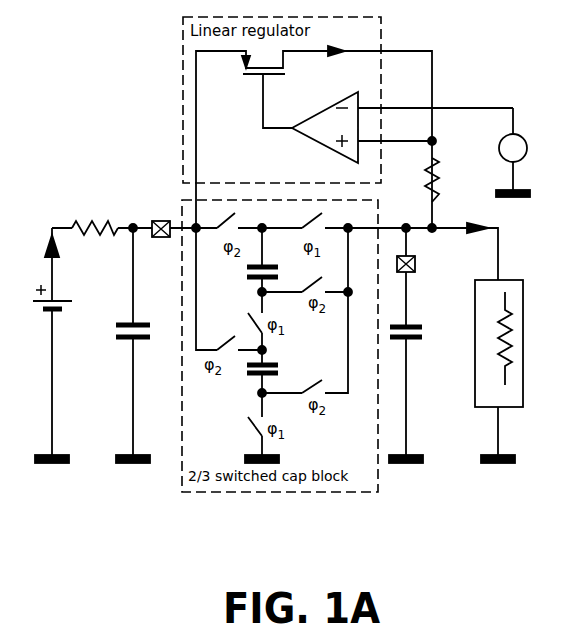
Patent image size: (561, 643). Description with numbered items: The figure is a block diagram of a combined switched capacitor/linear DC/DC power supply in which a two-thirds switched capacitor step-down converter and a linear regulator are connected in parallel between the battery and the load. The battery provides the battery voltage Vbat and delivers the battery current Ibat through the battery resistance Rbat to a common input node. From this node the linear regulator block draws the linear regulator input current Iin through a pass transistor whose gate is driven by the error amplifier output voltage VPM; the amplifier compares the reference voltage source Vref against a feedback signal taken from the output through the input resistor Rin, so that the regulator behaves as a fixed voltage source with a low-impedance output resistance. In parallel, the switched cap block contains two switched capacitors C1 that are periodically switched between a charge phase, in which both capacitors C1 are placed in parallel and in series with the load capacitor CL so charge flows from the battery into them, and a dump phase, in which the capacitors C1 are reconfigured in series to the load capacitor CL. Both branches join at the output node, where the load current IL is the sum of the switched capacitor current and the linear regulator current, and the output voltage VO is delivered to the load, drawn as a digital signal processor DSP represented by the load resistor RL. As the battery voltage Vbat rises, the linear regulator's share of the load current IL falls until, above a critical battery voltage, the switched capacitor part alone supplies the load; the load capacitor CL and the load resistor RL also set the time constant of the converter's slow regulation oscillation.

The battery voltage Vbat is at (52, 330).
The battery current Ibat is at (67, 274).
The battery resistance Rbat is at (95, 214).
The linear regulator input current Iin is at (314, 139).
The error amplifier output voltage VPM is at (380, 118).
The reference voltage source Vref is at (498, 152).
The input resistor Rin is at (442, 180).
The switched capacitor C1 is at (265, 341).
The load capacitor CL is at (411, 343).
The load current IL is at (457, 259).
The output voltage VO is at (517, 259).
The digital signal processor load DSP is at (499, 371).
The load resistor RL is at (496, 340).